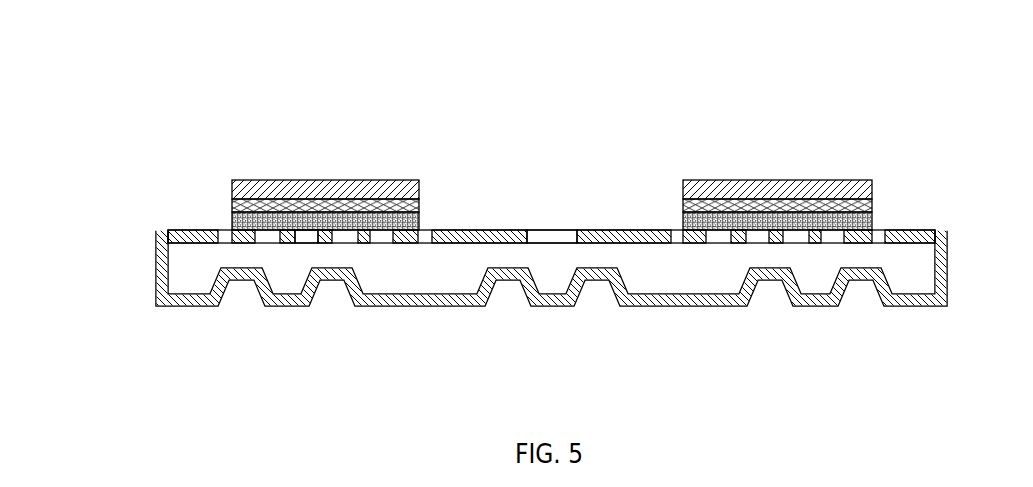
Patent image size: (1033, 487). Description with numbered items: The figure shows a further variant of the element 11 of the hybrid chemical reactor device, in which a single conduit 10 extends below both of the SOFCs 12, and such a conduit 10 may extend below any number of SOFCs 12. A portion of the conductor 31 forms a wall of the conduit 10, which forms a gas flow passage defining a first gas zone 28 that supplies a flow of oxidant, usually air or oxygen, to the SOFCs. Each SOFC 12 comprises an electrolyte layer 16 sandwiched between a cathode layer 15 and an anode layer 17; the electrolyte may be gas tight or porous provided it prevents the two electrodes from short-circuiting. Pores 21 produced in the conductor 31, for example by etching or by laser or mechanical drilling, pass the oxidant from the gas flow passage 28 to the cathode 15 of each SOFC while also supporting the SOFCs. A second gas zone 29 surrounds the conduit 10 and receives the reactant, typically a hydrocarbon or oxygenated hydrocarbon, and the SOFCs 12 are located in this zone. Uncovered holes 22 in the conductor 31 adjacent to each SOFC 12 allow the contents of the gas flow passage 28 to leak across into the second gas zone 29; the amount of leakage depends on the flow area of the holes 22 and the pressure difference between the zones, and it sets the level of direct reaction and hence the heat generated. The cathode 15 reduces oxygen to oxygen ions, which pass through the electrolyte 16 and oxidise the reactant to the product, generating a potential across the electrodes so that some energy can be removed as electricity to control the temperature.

The conduit 10 is at (156, 282).
The element 11 is at (227, 92).
The SOFC 12 is at (451, 187).
The cathode layer 15 is at (232, 222).
The electrolyte layer 16 is at (232, 205).
The anode layer 17 is at (230, 187).
The pores 21 is at (305, 238).
The uncovered holes 22 is at (545, 237).
The first gas zone 28 is at (427, 281).
The second gas zone 29 is at (555, 176).
The conductor 31 is at (653, 235).